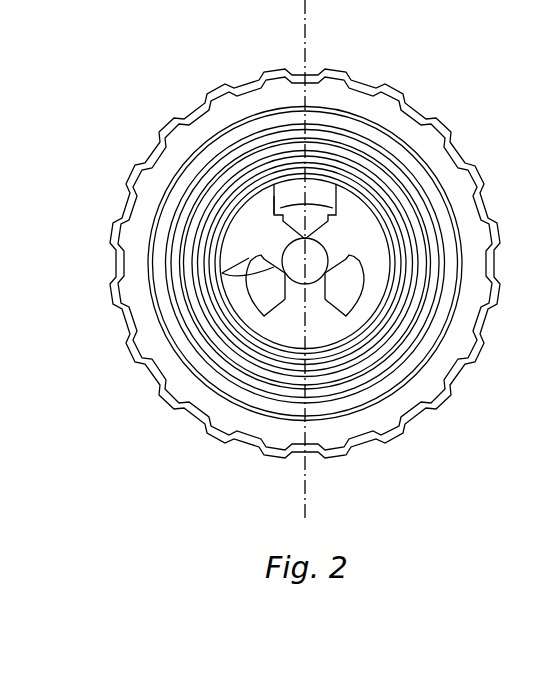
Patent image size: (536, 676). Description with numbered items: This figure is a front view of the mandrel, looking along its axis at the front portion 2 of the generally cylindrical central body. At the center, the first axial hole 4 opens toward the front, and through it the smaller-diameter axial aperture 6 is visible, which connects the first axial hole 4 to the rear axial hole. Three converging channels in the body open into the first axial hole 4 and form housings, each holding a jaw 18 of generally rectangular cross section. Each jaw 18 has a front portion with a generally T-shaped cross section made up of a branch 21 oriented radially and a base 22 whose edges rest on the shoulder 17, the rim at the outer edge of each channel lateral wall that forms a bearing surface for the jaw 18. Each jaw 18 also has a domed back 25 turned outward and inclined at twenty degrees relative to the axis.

The front portion 2 is at (343, 246).
The first axial hole 4 is at (299, 297).
The axial aperture 6 is at (295, 253).
The shoulder 17 is at (283, 205).
The jaw 18 is at (247, 293).
The branch 21 is at (222, 274).
The base 22 is at (360, 303).
The domed back 25 is at (322, 178).